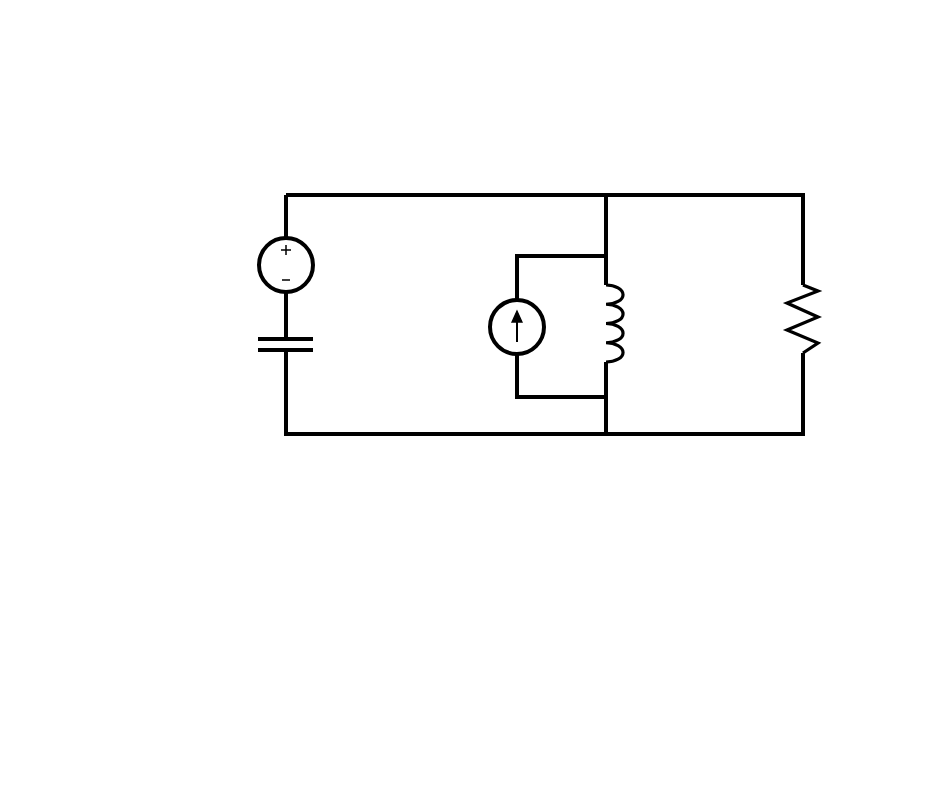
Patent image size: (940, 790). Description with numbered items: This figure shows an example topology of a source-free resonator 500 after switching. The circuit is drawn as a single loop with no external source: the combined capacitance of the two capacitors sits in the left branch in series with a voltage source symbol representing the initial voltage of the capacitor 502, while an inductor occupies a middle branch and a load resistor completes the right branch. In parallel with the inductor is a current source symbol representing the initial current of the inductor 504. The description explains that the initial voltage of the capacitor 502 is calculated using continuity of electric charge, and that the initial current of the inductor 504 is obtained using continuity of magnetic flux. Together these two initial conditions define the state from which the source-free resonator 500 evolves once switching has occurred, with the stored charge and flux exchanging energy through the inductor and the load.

The source-free resonator 500 is at (167, 108).
The initial voltage of the capacitor 502 is at (250, 307).
The initial current of the inductor 504 is at (483, 368).